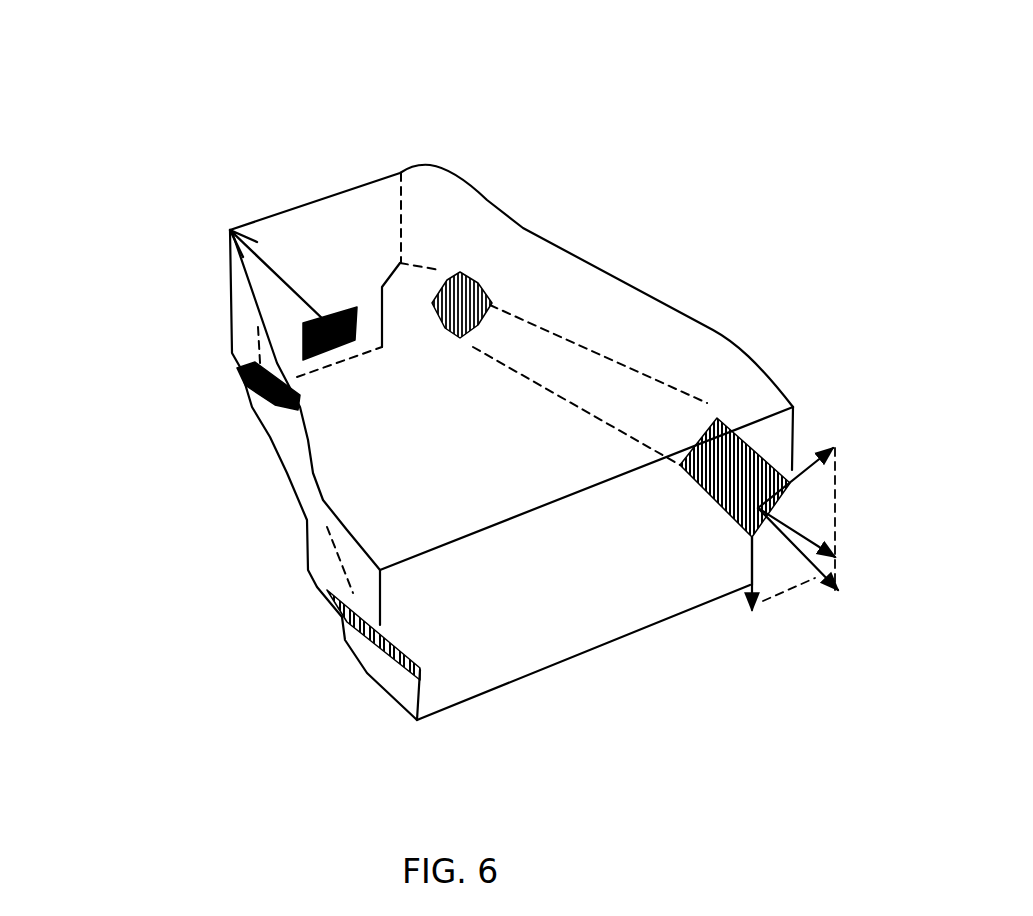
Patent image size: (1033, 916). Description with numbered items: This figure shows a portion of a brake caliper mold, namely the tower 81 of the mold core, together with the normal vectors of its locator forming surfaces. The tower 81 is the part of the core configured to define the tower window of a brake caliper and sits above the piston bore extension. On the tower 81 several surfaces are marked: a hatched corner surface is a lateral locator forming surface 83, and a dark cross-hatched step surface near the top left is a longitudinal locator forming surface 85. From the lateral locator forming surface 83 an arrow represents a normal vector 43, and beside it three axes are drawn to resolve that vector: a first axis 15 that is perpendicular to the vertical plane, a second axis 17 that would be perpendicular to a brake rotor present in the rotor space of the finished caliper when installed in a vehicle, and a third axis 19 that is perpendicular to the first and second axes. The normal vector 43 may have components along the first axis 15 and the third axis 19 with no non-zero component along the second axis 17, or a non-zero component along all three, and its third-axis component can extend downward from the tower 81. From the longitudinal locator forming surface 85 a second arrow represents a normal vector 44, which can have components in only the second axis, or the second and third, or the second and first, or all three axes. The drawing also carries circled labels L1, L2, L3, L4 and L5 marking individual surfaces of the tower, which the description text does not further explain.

The first axis 15 is at (803, 448).
The second axis 17 is at (825, 572).
The third axis 19 is at (765, 590).
The normal vector 43 is at (813, 537).
The normal vector 44 is at (267, 274).
The tower 81 is at (637, 333).
The lateral locator forming surface 83 is at (752, 462).
The longitudinal locator forming surface 85 is at (355, 307).
The first locating face L1 is at (328, 602).
The second locating face L2 is at (789, 409).
The third locating face L3 is at (235, 370).
The fourth locating face L4 is at (460, 292).
The fifth locating face L5 is at (329, 187).